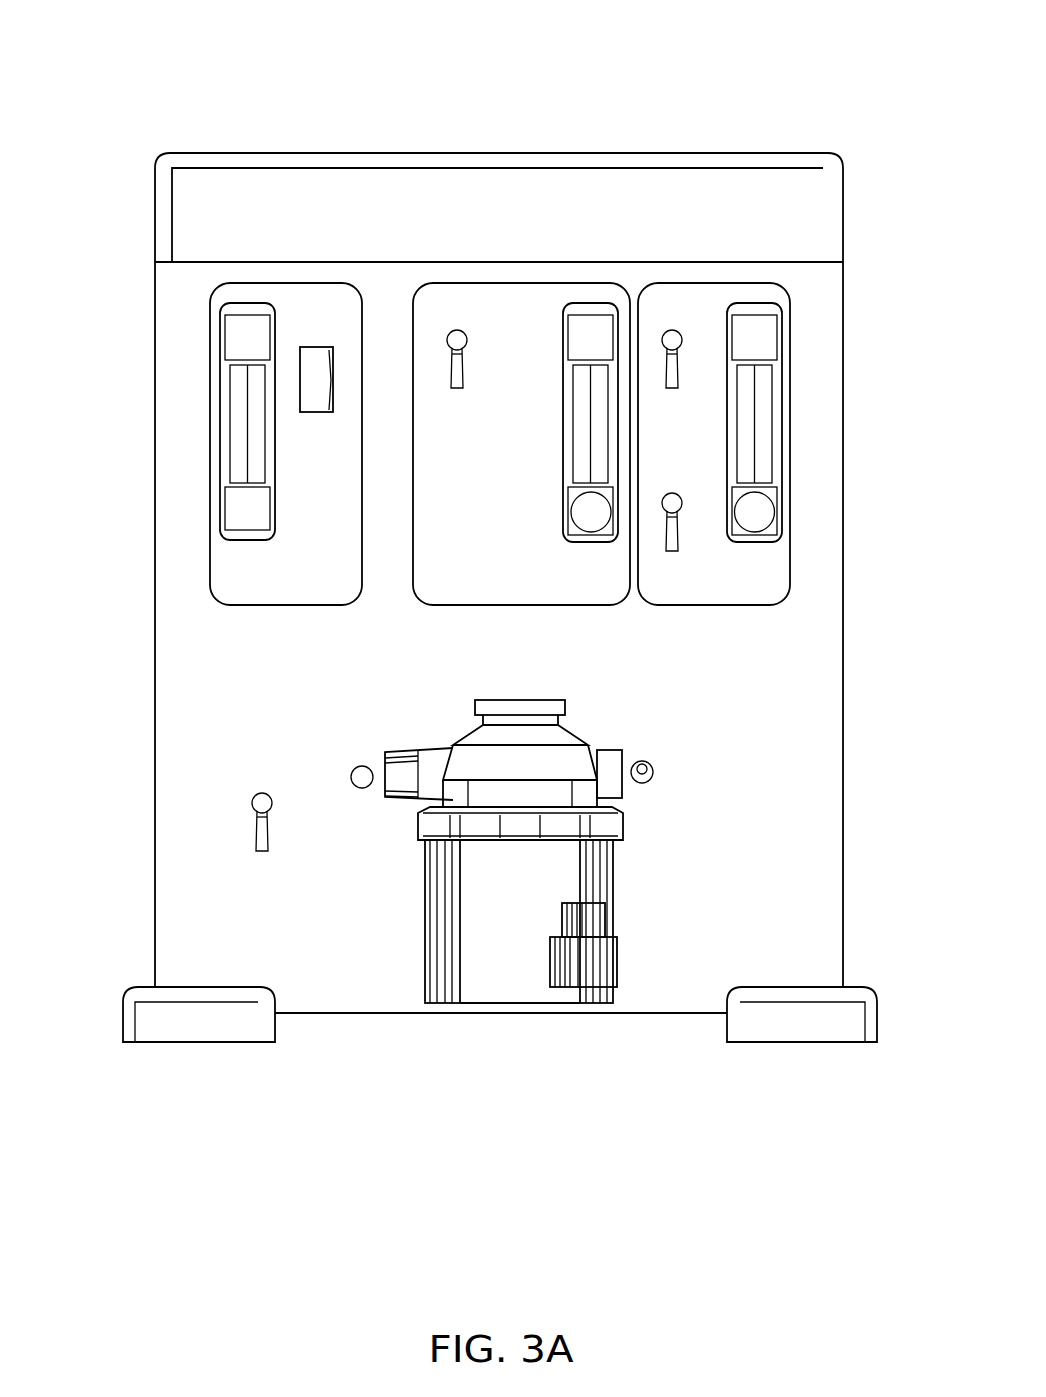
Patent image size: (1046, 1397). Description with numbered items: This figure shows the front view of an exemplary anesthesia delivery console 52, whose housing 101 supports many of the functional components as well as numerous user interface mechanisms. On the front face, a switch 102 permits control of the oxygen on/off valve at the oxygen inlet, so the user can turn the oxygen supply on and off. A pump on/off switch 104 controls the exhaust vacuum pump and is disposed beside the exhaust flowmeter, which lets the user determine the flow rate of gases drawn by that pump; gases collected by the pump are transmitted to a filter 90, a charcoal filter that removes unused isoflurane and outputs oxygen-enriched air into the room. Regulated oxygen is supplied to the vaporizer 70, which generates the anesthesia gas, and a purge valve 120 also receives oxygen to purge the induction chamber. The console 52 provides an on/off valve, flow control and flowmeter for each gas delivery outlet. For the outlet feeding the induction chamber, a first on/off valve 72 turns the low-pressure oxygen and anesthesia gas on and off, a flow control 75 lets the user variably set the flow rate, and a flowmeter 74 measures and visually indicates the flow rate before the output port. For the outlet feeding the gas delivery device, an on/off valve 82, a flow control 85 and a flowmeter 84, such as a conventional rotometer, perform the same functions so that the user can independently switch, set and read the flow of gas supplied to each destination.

The console 52 is at (850, 93).
The vaporizer 70 is at (522, 1003).
The first on/off valve 72 is at (672, 330).
The flowmeter 74 is at (764, 390).
The flow control 75 is at (758, 510).
The on/off valve 82 is at (457, 330).
The flowmeter 84 is at (592, 332).
The flow control 85 is at (592, 512).
The filter 90 is at (237, 455).
The housing 101 is at (800, 843).
The switch 102 is at (262, 803).
The pump on/off switch 104 is at (316, 378).
The purge valve 120 is at (672, 540).